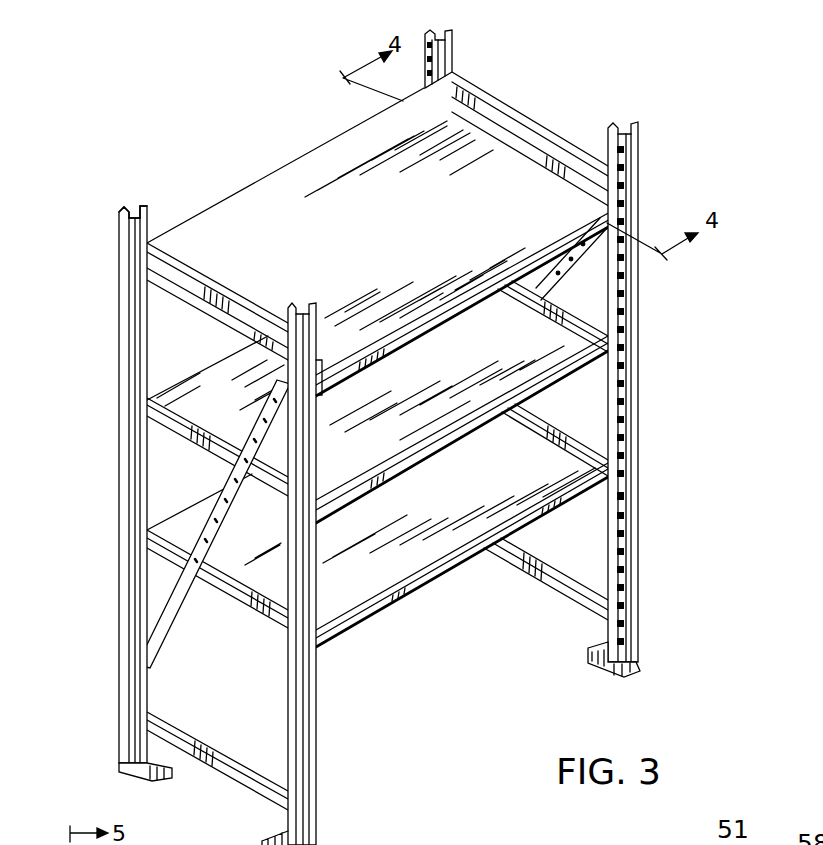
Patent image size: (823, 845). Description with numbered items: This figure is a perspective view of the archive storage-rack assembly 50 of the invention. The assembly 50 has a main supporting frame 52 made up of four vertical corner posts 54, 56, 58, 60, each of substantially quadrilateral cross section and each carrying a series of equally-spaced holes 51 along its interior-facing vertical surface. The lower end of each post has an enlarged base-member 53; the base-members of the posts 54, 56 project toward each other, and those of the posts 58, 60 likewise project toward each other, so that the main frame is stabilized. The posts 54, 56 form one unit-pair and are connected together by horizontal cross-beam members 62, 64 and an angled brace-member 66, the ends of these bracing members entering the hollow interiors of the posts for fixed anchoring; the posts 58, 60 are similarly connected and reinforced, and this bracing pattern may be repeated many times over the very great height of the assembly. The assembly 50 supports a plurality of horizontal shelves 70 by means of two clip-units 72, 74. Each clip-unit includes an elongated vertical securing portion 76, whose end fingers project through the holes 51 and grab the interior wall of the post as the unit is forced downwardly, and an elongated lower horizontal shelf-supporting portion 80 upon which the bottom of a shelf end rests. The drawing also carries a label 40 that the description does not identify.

The shelving assembly 40 is at (140, 360).
The archive storage-rack assembly 50 is at (384, 427).
The holes 51 is at (428, 38).
The main supporting frame 52 is at (88, 484).
The enlarged base-member 53 is at (140, 765).
The vertical corner post 54 is at (118, 250).
The vertical corner post 56 is at (307, 747).
The vertical corner post 58 is at (628, 372).
The vertical corner post 60 is at (453, 50).
The horizontal cross-beam member 62 is at (180, 268).
The horizontal cross-beam member 64 is at (237, 770).
The angled brace-member 66 is at (163, 625).
The horizontal shelf 70 is at (387, 243).
The shelf clip-unit 72 is at (326, 400).
The shelf clip-unit 74 is at (476, 123).
The vertical securing portion 76 is at (178, 437).
The horizontal shelf-supporting portion 80 is at (620, 497).